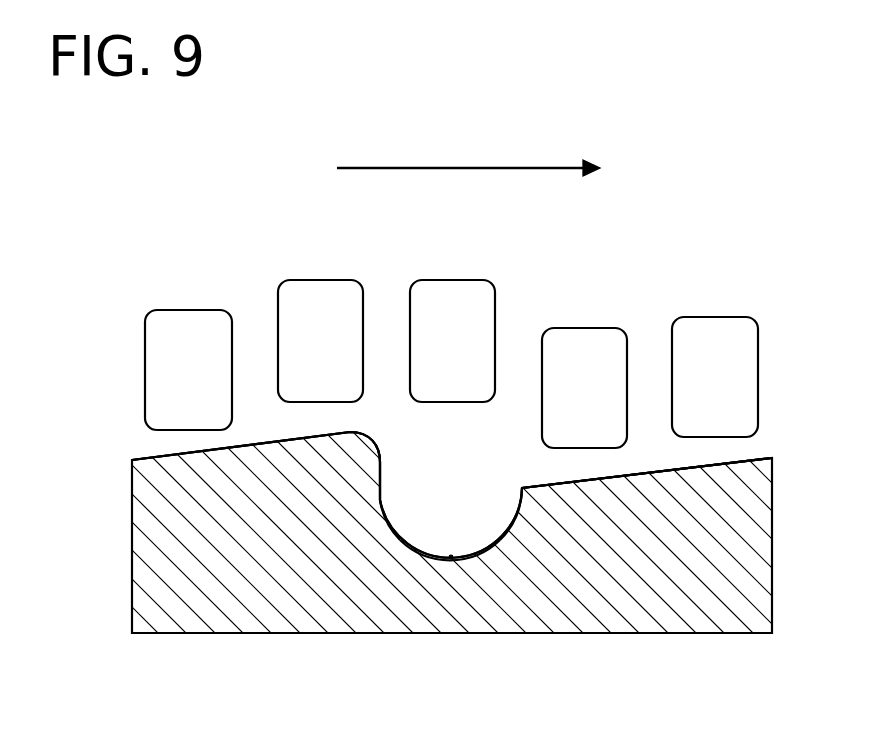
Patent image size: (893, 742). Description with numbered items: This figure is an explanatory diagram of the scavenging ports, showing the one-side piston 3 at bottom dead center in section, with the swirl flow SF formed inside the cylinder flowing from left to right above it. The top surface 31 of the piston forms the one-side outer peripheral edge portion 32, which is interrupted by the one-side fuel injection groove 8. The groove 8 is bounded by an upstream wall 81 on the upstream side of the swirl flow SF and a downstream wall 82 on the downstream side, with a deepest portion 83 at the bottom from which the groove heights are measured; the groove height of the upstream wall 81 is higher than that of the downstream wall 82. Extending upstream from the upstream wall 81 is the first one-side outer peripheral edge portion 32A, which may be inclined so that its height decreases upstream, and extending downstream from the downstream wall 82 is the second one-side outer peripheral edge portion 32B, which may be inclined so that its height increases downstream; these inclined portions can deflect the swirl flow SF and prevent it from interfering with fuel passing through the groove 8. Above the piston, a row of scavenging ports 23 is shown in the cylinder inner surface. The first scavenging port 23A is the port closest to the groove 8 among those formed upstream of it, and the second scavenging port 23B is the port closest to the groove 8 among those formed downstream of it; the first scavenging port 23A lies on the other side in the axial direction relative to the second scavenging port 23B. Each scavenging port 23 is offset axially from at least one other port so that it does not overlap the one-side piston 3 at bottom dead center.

The one-side piston 3 is at (175, 633).
The one-side fuel injection groove 8 is at (383, 502).
The upstream wall 81 is at (383, 517).
The downstream wall 82 is at (513, 528).
The deepest portion 83 is at (451, 558).
The top surface 31 is at (710, 465).
The one-side outer peripheral edge portion 32 is at (452, 460).
The first one-side outer peripheral edge portion 32A is at (241, 440).
The second one-side outer peripheral edge portion 32B is at (628, 474).
The scavenging port 23 is at (192, 310).
The first scavenging port 23A is at (322, 280).
The second scavenging port 23B is at (585, 328).
The swirl flow SF is at (462, 167).